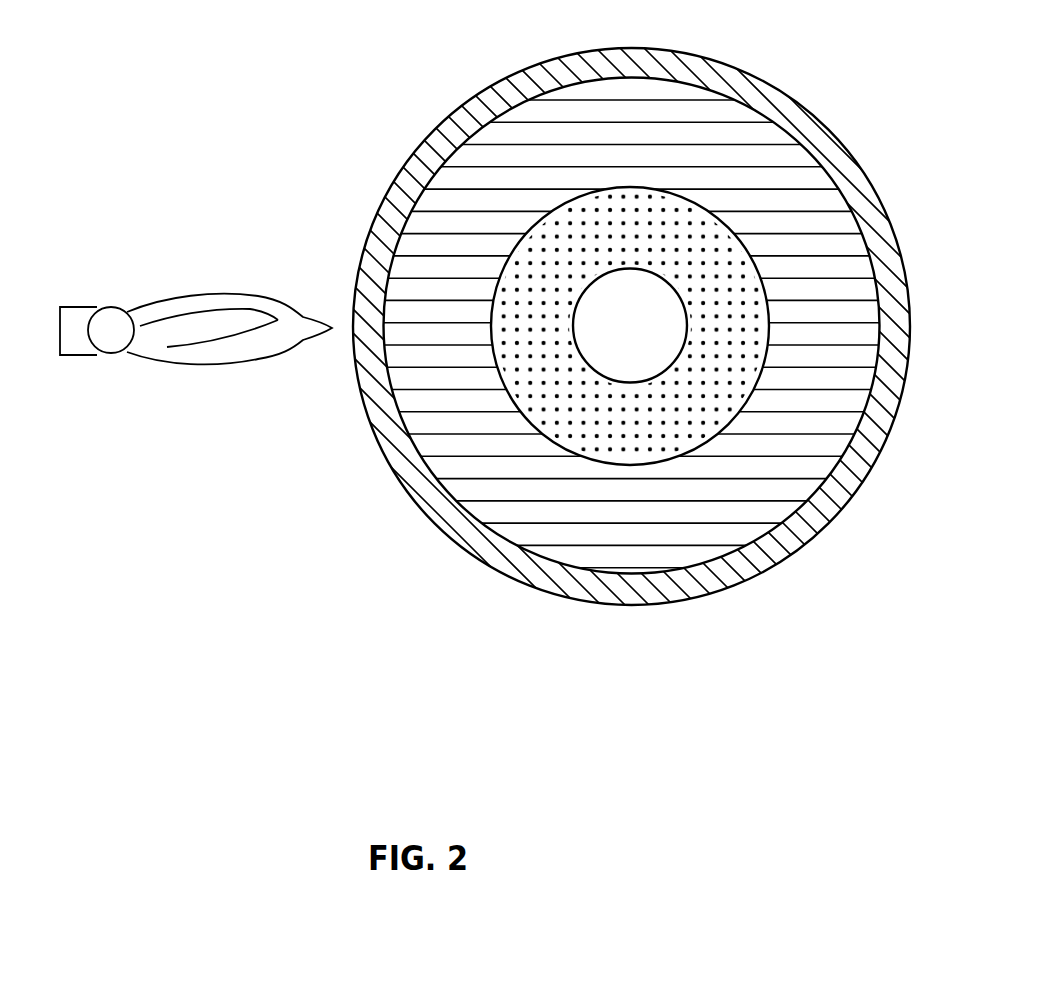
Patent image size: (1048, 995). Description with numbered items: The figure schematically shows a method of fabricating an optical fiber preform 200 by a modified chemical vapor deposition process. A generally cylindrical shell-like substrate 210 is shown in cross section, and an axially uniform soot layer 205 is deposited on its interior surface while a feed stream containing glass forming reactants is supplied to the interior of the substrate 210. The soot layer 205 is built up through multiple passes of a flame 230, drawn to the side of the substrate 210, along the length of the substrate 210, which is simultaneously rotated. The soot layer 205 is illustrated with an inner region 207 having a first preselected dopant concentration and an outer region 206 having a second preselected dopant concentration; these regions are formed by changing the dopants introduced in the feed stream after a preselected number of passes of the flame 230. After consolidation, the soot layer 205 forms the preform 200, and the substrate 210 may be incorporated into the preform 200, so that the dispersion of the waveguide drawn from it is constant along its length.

The preform 200 is at (524, 401).
The soot layer 205 is at (702, 379).
The outer region 206 is at (745, 480).
The inner region 207 is at (652, 420).
The substrate 210 is at (792, 100).
The flame 230 is at (268, 298).